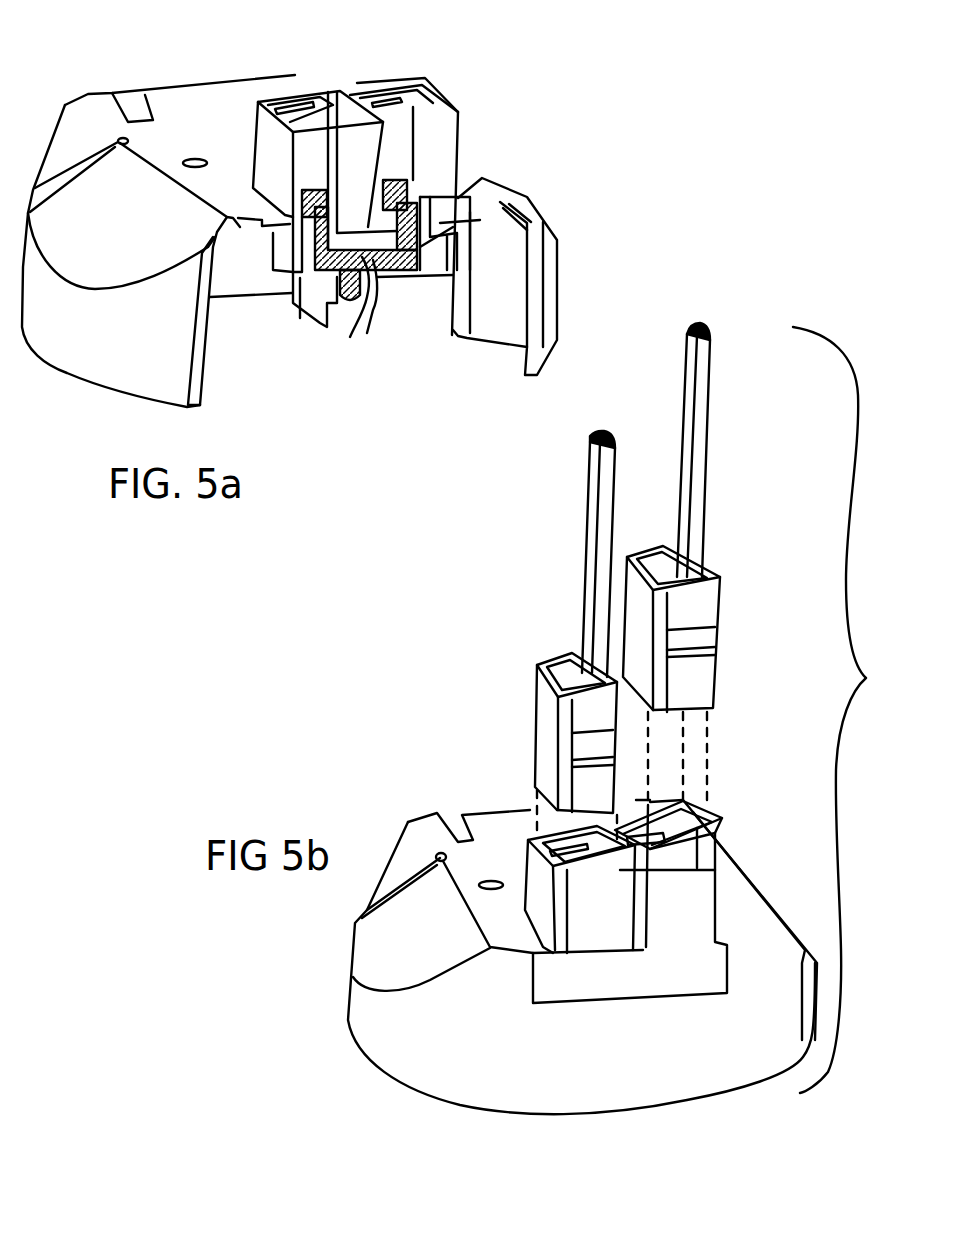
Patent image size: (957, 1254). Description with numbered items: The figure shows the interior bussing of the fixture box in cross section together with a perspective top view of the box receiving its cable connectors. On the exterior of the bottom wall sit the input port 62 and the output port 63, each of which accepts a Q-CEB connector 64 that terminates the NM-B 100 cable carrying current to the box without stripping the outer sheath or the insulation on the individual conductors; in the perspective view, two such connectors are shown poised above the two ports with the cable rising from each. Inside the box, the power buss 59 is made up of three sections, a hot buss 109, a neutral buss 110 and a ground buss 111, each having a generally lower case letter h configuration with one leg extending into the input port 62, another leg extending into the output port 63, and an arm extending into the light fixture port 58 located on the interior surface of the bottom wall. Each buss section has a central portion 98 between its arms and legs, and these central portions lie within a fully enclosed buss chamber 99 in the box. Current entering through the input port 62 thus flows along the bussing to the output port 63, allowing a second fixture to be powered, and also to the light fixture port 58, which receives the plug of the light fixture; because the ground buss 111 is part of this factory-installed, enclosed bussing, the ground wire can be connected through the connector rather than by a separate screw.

In FIG. 5A, the light fixture port 58 is at (342, 313).
In FIG. 5A, the power buss 59 is at (413, 262).
In FIG. 5A, the input port 62 is at (409, 106).
In FIG. 5B, the input port 62 is at (687, 857).
In FIG. 5A, the output port 63 is at (307, 122).
In FIG. 5B, the output port 63 is at (537, 833).
In FIG. 5B, the Q-CEB connector 64 is at (543, 700).
In FIG. 5A, the central portion 98 is at (367, 265).
In FIG. 5A, the buss chamber 99 is at (397, 260).
In FIG. 5B, the NM-B 100 is at (605, 478).
In FIG. 5A, the hot buss 109 is at (467, 162).
In FIG. 5A, the neutral buss 110 is at (387, 183).
In FIG. 5A, the ground buss 111 is at (413, 180).